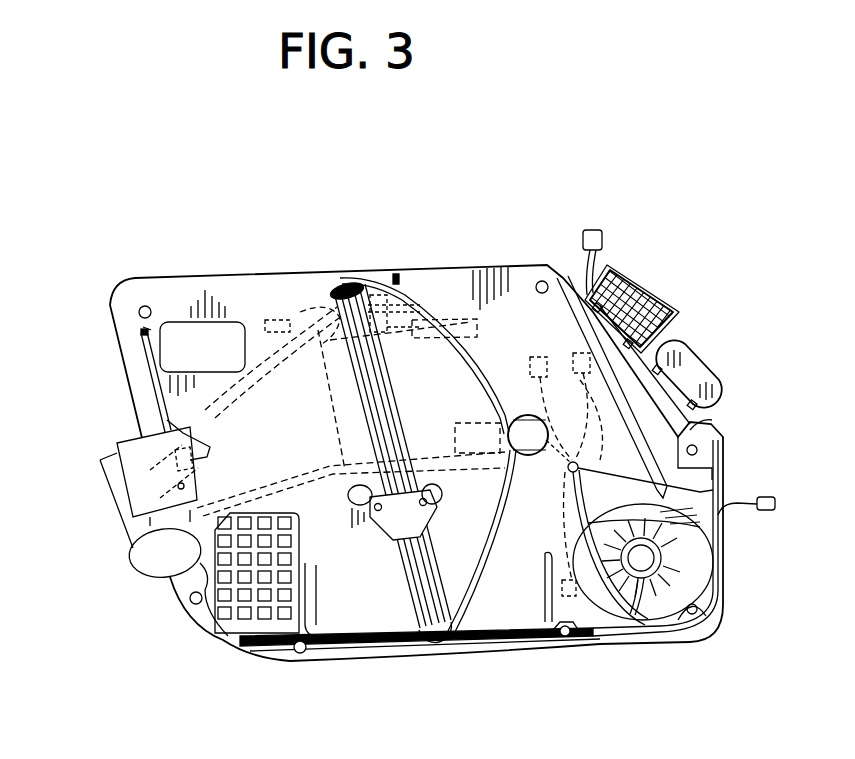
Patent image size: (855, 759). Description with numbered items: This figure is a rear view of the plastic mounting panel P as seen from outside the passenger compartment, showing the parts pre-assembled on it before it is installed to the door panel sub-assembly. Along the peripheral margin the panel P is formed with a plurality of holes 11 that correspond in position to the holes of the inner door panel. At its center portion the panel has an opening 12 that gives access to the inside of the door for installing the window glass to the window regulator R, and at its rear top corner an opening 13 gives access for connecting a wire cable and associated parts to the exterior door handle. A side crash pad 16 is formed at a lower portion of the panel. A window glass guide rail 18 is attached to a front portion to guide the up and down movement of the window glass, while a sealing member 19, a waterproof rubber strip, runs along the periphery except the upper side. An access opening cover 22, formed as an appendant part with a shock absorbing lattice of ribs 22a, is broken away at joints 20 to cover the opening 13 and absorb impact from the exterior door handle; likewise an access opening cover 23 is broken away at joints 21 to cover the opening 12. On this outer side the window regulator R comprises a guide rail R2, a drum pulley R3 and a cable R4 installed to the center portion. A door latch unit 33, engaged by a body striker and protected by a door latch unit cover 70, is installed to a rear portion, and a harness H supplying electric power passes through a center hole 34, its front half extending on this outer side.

The plastic mounting panel P is at (220, 276).
The holes 11 is at (140, 308).
The opening 12 is at (345, 500).
The opening 13 is at (143, 336).
The side crash pad 16 is at (250, 627).
The window glass guide rail 18 is at (625, 377).
The sealing member 19 is at (683, 421).
The joints 20 is at (582, 298).
The joints 21 is at (700, 405).
The access opening cover 22 is at (650, 277).
The ribs 22a is at (673, 268).
The access opening cover 23 is at (707, 367).
The door latch unit 33 is at (127, 540).
The center hole 34 is at (695, 492).
The door latch unit cover 70 is at (118, 440).
The window regulator R is at (396, 275).
The guide rail R2 is at (323, 350).
The drum pulley R3 is at (525, 413).
The cable R4 is at (440, 320).
The harness H is at (603, 577).